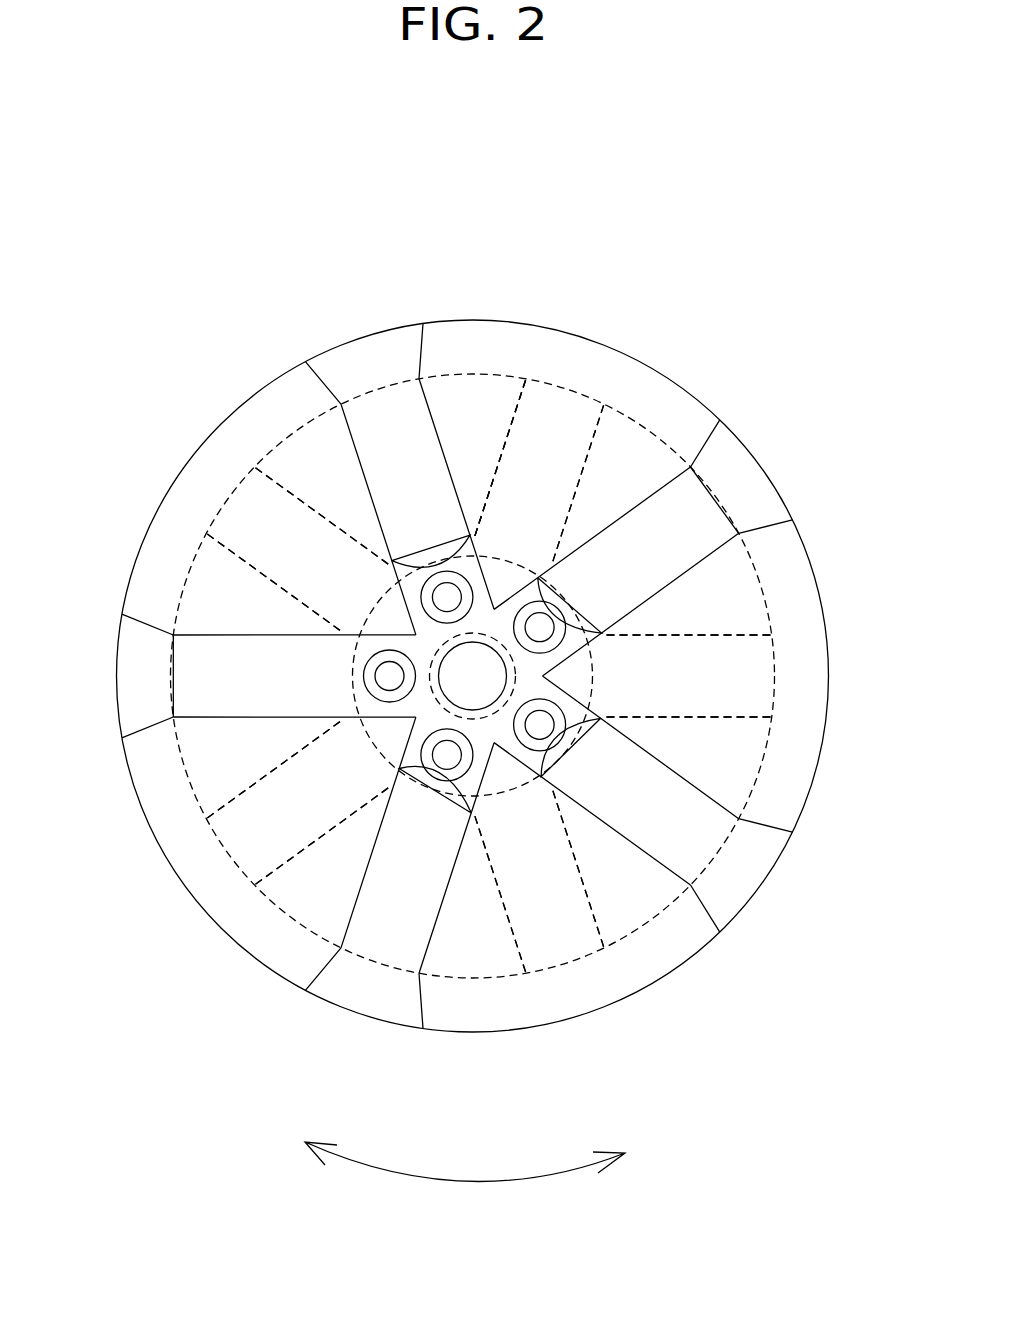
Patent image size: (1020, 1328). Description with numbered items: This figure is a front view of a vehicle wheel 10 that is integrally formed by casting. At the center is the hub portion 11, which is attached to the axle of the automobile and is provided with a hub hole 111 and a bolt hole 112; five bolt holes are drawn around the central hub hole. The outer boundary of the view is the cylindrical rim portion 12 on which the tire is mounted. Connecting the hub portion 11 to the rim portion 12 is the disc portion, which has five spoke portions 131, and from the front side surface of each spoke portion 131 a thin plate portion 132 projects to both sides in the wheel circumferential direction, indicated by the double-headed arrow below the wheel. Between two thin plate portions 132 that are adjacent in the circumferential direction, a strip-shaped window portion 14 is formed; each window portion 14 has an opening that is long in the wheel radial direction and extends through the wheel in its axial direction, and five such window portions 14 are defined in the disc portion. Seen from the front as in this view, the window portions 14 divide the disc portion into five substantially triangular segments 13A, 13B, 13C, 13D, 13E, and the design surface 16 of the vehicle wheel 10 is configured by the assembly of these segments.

The vehicle wheel 10 is at (507, 252).
The hub portion 11 is at (502, 600).
The hub hole 111 is at (492, 679).
The bolt hole 112 is at (447, 585).
The rim portion 12 is at (290, 990).
The segment 13A is at (735, 683).
The segment 13B is at (622, 450).
The segment 13C is at (272, 528).
The segment 13D is at (250, 845).
The segment 13E is at (560, 933).
The spoke portion 131 is at (195, 800).
The thin plate portion 132 is at (317, 455).
The window portion 14 is at (390, 420).
The design surface 16 is at (560, 403).